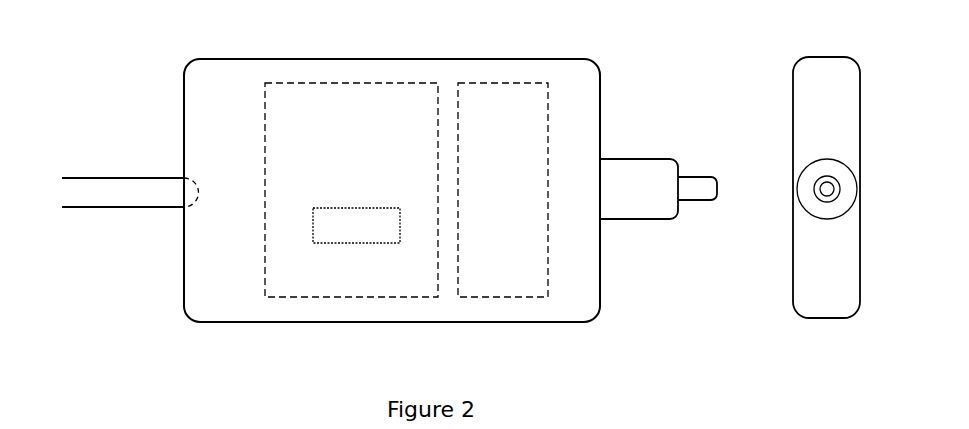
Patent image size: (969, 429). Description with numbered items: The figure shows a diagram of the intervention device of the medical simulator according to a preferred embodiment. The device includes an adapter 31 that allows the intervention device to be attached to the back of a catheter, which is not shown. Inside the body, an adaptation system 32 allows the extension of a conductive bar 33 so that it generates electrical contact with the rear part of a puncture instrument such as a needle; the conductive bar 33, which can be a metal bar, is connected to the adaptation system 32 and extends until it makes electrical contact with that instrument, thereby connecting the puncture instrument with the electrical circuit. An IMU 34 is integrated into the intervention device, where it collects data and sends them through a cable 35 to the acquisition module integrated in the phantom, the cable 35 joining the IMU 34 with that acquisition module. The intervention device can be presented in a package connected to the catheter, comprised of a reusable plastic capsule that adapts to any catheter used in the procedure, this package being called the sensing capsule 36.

The adapter 31 is at (621, 235).
The adaptation system 32 is at (525, 84).
The conductive bar 33 is at (703, 172).
The IMU 34 is at (368, 82).
The cable 35 is at (123, 210).
The sensing capsule 36 is at (776, 290).